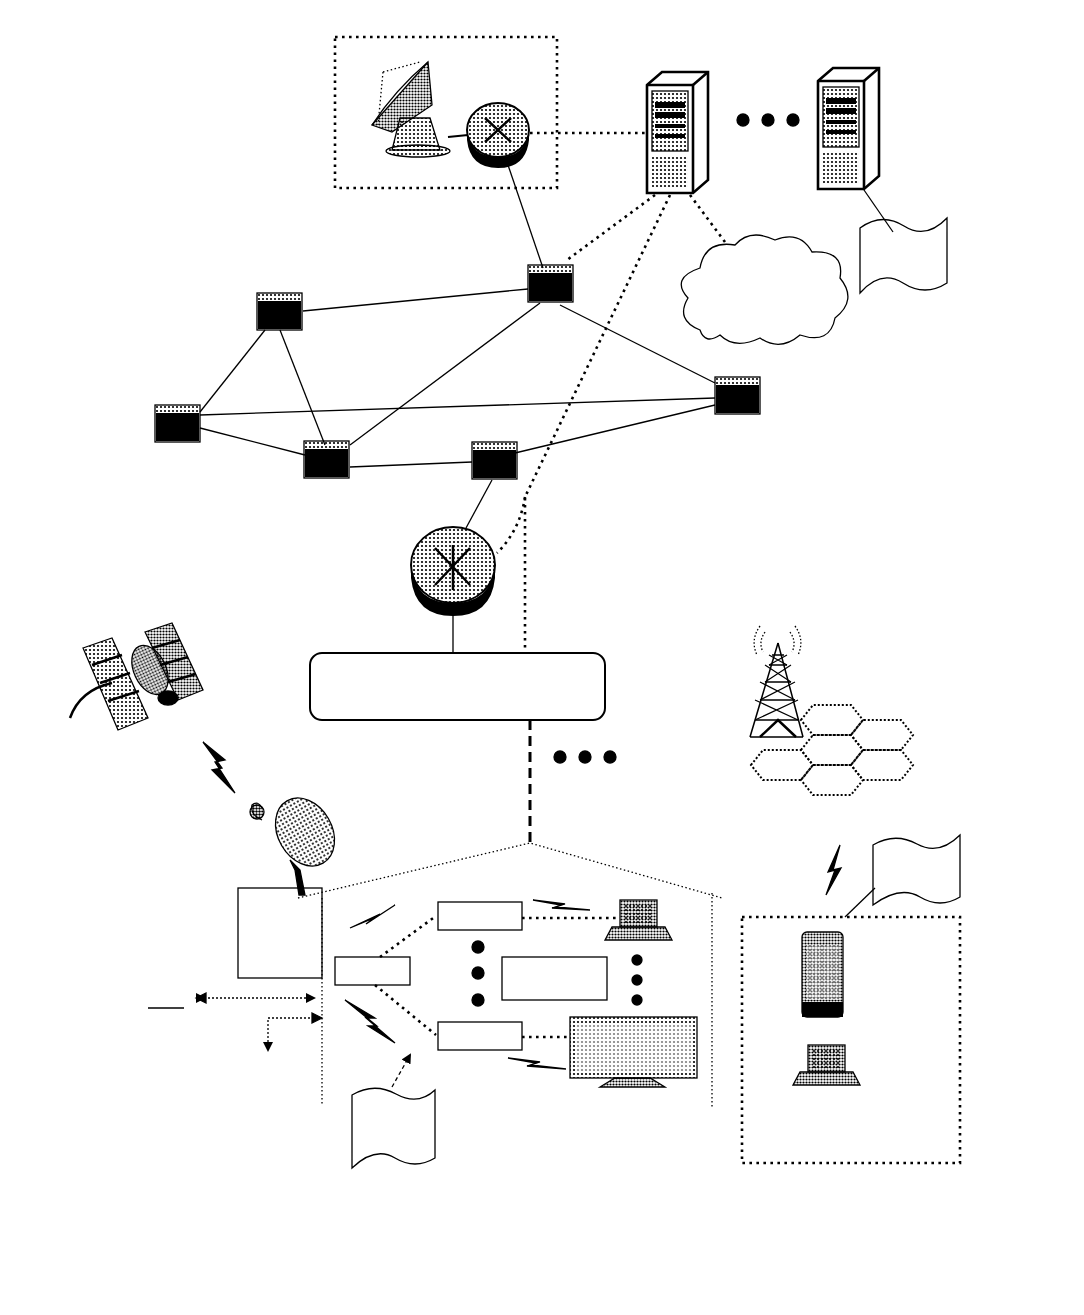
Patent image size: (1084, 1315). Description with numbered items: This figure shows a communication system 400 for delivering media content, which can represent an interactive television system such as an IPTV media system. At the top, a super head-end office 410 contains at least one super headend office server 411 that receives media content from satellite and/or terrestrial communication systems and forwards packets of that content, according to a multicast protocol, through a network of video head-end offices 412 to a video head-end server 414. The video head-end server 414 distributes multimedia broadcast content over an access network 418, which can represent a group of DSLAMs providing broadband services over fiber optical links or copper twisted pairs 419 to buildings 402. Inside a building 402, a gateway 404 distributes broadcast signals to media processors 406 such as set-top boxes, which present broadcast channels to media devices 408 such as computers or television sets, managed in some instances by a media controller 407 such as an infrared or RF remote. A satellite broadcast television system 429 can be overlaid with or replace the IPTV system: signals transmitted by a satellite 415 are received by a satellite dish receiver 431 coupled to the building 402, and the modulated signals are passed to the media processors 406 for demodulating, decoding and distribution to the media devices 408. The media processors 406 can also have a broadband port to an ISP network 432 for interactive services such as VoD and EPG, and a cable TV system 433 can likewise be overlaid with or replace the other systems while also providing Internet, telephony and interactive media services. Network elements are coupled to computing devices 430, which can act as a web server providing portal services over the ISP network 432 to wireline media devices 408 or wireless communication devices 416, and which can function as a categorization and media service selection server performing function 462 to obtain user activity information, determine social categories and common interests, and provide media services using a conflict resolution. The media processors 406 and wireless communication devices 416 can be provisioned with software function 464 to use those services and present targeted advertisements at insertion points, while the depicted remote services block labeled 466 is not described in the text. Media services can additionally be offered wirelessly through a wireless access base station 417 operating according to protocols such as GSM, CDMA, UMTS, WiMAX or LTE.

The communication system 400 is at (168, 134).
The buildings 402 is at (531, 1126).
The gateway 404 is at (396, 982).
The media processors 406 is at (515, 927).
The media controller 407 is at (595, 990).
The media devices 408 is at (645, 900).
The super head-end office 410 is at (333, 122).
The super headend office server 411 is at (470, 113).
The video head-end offices 412 is at (155, 427).
The video head-end server 414 is at (412, 577).
The satellite 415 is at (123, 692).
The wireless communication devices 416 is at (855, 948).
The wireless access base station 417 is at (829, 705).
The access network 418 is at (607, 682).
The fiber optical links or copper twisted pairs 419 is at (527, 806).
The satellite broadcast television system 429 is at (232, 738).
The computing devices 430 is at (853, 62).
The satellite dish receiver 431 is at (218, 893).
The ISP network 432 is at (745, 330).
The cable TV system 433 is at (248, 1123).
The function 462 is at (914, 269).
The software function 464 is at (408, 1139).
The data 466 is at (929, 882).